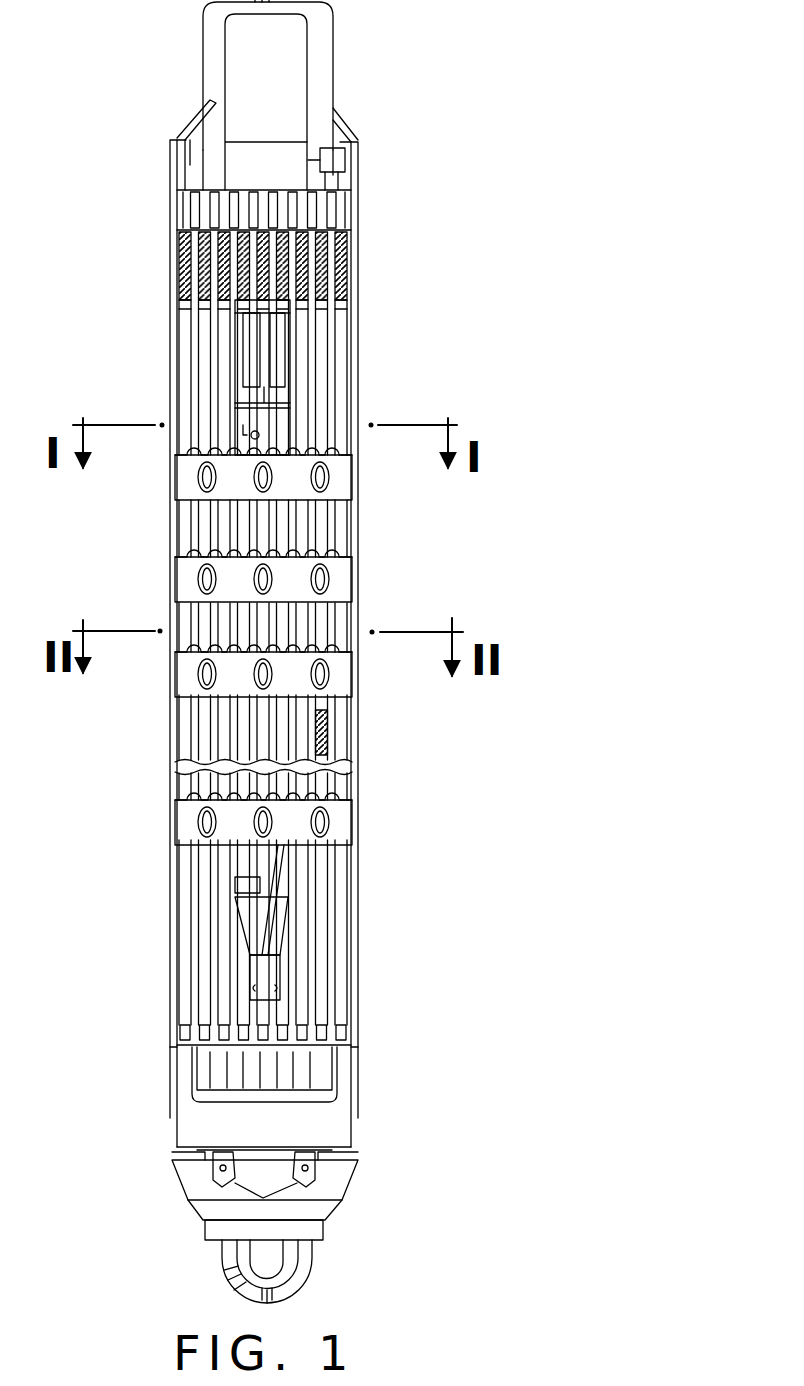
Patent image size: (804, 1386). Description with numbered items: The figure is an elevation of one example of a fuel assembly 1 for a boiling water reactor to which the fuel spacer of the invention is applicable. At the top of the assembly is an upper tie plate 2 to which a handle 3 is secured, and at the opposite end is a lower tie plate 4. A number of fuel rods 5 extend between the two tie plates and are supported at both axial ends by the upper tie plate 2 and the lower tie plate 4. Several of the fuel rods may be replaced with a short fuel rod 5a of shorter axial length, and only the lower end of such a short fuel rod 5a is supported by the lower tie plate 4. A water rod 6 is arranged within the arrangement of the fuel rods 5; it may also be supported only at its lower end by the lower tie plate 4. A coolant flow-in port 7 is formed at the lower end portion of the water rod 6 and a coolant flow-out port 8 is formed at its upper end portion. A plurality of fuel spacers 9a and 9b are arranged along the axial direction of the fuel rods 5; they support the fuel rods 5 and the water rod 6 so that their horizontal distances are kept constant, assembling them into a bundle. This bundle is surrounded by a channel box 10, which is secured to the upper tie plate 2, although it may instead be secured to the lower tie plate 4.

The fuel assembly 1 is at (414, 80).
The upper tie plate 2 is at (345, 215).
The handle 3 is at (318, 68).
The lower tie plate 4 is at (340, 1188).
The fuel rods 5 is at (345, 348).
The short fuel rod 5a is at (325, 730).
The water rod 6 is at (292, 430).
The coolant flow-in port 7 is at (275, 975).
The coolant flow-out port 8 is at (243, 432).
The fuel spacer 9a is at (178, 830).
The fuel spacers 9b is at (178, 488).
The channel box 10 is at (358, 318).